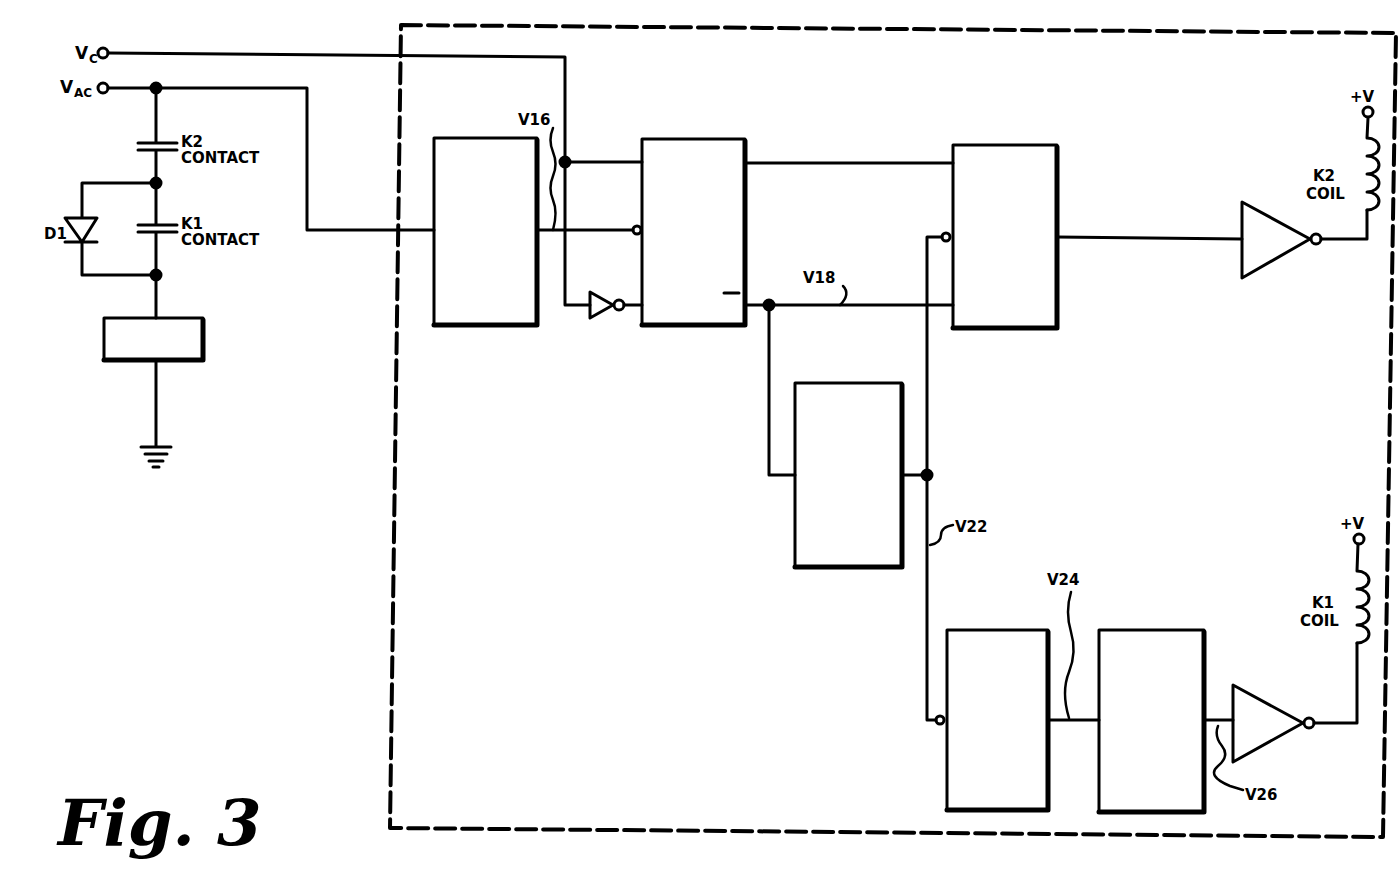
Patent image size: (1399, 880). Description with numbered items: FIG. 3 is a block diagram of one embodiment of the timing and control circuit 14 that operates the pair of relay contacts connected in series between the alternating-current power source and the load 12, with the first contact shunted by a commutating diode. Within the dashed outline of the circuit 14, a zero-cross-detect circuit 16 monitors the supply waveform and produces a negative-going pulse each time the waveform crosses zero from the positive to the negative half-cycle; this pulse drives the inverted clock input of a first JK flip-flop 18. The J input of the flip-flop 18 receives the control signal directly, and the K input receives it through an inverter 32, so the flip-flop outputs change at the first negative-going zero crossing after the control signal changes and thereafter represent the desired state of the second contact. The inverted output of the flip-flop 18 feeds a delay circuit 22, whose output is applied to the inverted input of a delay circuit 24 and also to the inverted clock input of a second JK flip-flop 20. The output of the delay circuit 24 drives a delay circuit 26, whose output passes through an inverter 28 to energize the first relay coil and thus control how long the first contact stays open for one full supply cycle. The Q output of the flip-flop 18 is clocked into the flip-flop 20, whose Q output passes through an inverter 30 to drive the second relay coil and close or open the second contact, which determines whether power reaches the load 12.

The load 12 is at (104, 340).
The timing and control circuit 14 is at (394, 541).
The zero-cross-detect circuit 16 is at (460, 325).
The JK flip-flop 18 is at (676, 325).
The JK flip-flop 20 is at (1010, 327).
The delay circuit 22 is at (817, 568).
The delay circuit 24 is at (985, 630).
The delay circuit 26 is at (1143, 636).
The inverter 28 is at (1278, 742).
The inverter 30 is at (1268, 263).
The inverter 32 is at (605, 318).